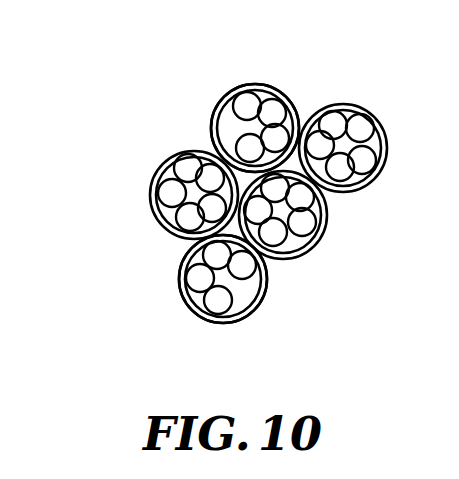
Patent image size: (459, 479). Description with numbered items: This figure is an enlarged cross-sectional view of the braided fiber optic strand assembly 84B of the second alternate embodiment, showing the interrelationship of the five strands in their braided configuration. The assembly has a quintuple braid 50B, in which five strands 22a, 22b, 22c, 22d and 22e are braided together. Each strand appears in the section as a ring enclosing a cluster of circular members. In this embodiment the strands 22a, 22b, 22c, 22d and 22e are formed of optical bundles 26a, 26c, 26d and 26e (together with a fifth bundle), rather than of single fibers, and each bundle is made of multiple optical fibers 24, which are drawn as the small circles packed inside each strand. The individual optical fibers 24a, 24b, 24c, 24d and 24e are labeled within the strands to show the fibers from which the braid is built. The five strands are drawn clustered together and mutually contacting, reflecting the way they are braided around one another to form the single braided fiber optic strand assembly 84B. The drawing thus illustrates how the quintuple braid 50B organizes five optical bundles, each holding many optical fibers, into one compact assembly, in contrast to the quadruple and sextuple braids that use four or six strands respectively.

The quintuple braid 50B is at (256, 80).
The strand 22a is at (322, 247).
The strand 22b is at (191, 314).
The strand 22c is at (152, 216).
The strand 22d is at (226, 89).
The strand 22e is at (360, 194).
The optical fiber 24 is at (180, 171).
The optical fiber 24a is at (333, 124).
The optical fiber 24b is at (362, 131).
The optical fiber 24c is at (370, 160).
The optical fiber 24d is at (352, 172).
The optical fiber 24e is at (313, 197).
The optical bundle 26a is at (296, 237).
The optical bundle 26c is at (166, 202).
The optical bundle 26d is at (229, 131).
The optical bundle 26e is at (383, 150).
The braided fiber optic strand assembly 84B is at (241, 323).